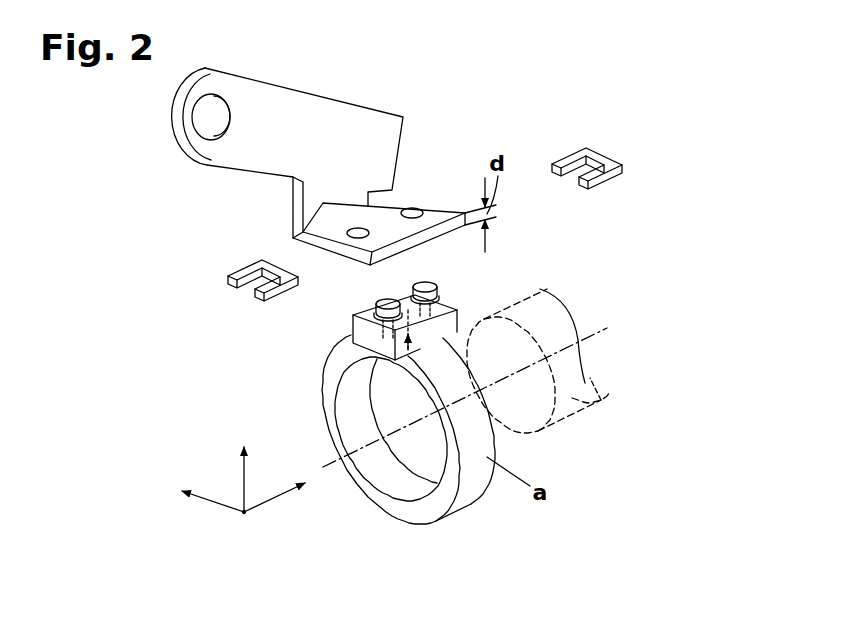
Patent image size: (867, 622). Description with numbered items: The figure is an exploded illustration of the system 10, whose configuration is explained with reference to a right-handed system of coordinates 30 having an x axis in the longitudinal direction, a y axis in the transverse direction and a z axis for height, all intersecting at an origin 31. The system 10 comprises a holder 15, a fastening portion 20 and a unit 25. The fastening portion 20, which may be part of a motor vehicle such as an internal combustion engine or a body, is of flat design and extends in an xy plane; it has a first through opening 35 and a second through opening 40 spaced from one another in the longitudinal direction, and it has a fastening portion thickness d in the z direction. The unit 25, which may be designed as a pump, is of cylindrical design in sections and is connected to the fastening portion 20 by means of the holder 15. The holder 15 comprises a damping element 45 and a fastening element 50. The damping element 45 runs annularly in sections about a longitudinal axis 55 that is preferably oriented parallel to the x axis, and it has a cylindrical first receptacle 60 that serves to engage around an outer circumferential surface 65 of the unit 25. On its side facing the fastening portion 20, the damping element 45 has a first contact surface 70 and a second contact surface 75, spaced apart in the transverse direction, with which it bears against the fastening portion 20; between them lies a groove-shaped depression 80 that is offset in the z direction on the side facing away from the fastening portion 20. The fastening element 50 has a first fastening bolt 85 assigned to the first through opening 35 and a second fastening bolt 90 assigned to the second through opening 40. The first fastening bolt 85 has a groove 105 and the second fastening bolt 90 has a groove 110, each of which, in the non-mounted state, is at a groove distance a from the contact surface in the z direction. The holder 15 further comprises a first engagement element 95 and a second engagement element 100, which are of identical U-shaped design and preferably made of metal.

The system 10 is at (465, 401).
The holder 15 is at (483, 508).
The fastening portion 20 is at (432, 217).
The unit 25 is at (578, 417).
The system of coordinates 30 is at (190, 522).
The origin 31 is at (244, 517).
The first through opening 35 is at (356, 230).
The second through opening 40 is at (412, 207).
The damping element 45 is at (418, 513).
The fastening element 50 is at (470, 300).
The longitudinal axis 55 is at (605, 332).
The first receptacle 60 is at (345, 414).
The outer circumferential surface 65 is at (612, 420).
The first contact surface 70 is at (513, 325).
The second contact surface 75 is at (383, 300).
The depression 80 is at (354, 345).
The first fastening bolt 85 is at (376, 323).
The second fastening bolt 90 is at (424, 284).
The first engagement element 95 is at (237, 268).
The second engagement element 100 is at (597, 162).
The groove 105 is at (378, 332).
The groove 110 is at (443, 293).